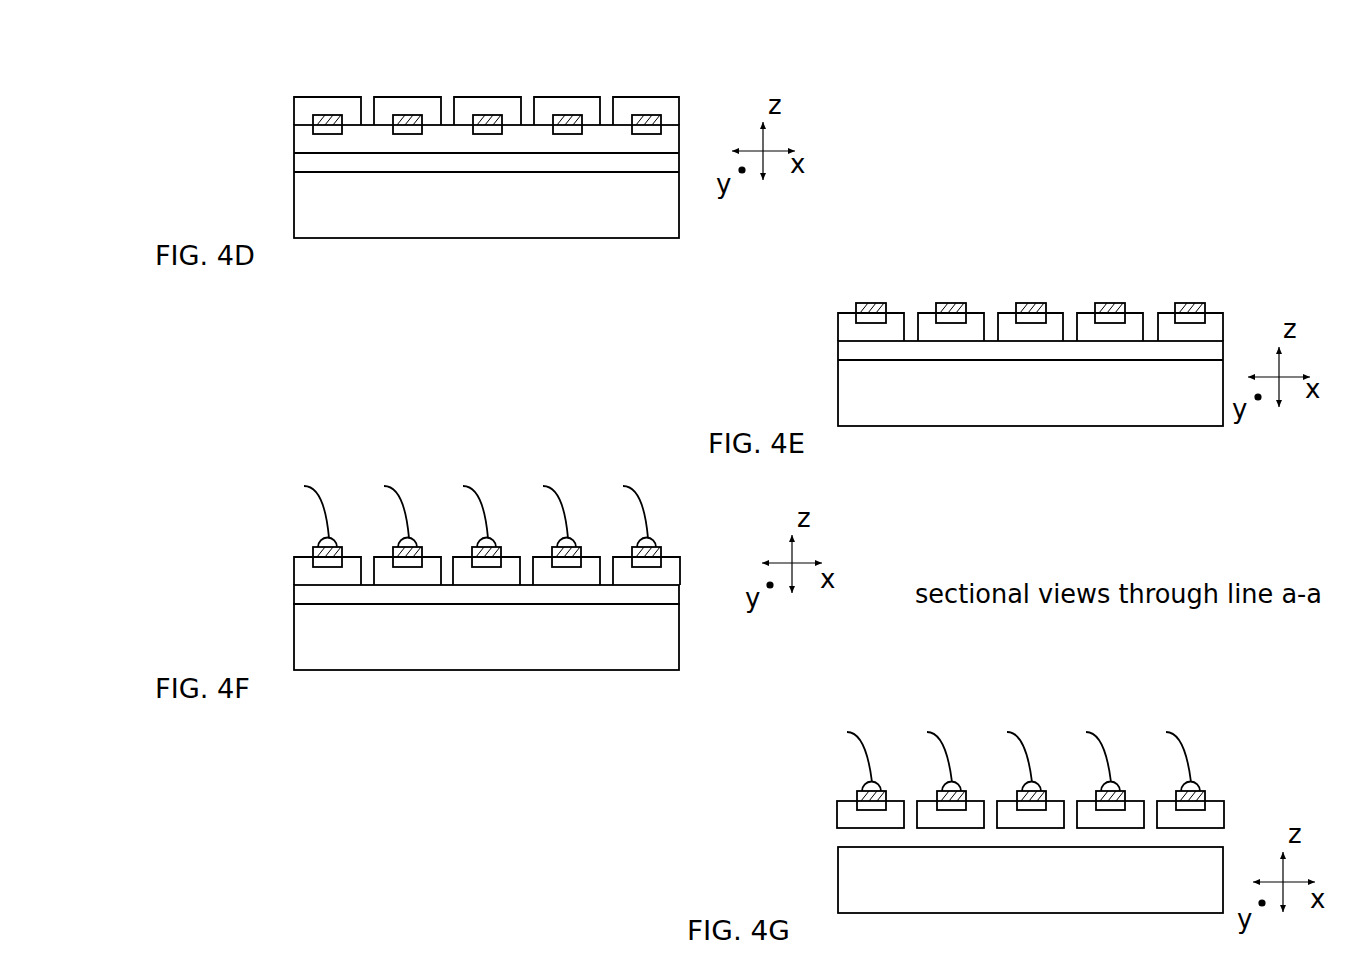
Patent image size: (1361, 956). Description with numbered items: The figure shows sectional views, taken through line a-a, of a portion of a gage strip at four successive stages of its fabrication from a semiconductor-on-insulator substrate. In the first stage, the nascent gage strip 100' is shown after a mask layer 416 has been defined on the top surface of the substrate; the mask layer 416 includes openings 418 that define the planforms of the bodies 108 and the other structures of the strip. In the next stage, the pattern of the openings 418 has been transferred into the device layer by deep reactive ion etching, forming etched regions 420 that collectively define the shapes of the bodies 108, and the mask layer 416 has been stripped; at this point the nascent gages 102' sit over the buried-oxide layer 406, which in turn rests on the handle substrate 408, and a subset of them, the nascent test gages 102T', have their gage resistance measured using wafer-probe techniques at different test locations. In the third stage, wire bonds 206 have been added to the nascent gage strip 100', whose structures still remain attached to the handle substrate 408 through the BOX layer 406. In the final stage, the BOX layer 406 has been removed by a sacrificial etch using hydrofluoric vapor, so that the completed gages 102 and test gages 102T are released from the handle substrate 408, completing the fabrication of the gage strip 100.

In FIG. 4D, the nascent gage strip 100' is at (476, 133).
In FIG. 4E, the nascent gage strip 100' is at (1039, 309).
In FIG. 4F, the nascent gage strip 100' is at (485, 540).
In FIG. 4G, the gage strip 100 is at (978, 793).
In FIG. 4G, the gage 102 is at (968, 742).
In FIG. 4E, the nascent gage 102' is at (968, 258).
In FIG. 4G, the test gage 102T is at (1134, 742).
In FIG. 4E, the nascent test gage 102T' is at (1134, 258).
In FIG. 4E, the body 108 is at (1215, 319).
In FIG. 4F, the wire bond 206 is at (403, 502).
In FIG. 4F, the buried-oxide (BOX) layer 406 is at (303, 593).
In FIG. 4F, the handle substrate 408 is at (637, 657).
In FIG. 4G, the handle substrate 408 is at (1172, 903).
In FIG. 4D, the mask layer 416 is at (690, 107).
In FIG. 4D, the opening 418 is at (363, 92).
In FIG. 4E, the etched region 420 is at (911, 322).